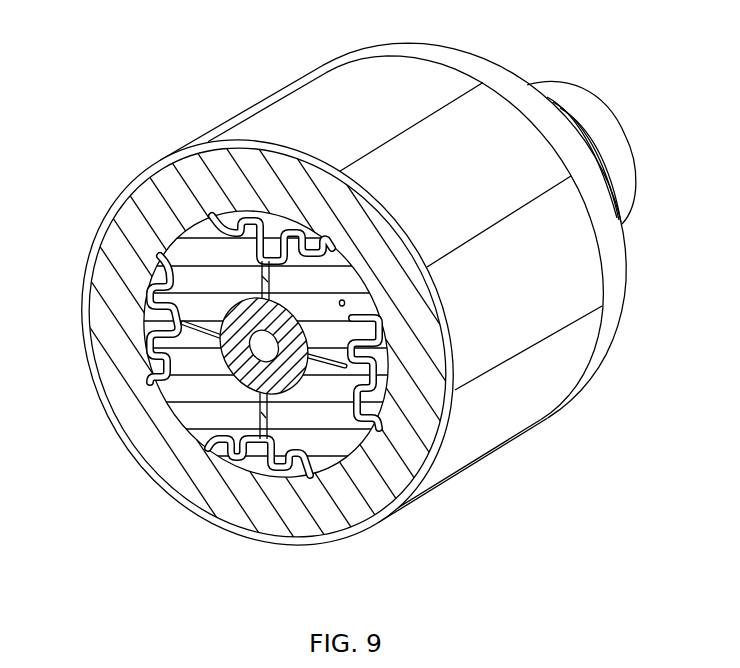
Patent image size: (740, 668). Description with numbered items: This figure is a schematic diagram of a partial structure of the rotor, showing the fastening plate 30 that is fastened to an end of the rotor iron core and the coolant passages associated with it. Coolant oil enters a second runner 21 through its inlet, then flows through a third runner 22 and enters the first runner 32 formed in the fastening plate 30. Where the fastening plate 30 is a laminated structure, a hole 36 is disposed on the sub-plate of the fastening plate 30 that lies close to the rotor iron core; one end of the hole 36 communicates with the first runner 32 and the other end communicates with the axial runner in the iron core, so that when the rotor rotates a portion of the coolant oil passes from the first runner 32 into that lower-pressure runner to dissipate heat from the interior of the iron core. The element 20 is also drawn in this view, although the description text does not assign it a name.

The hub 20 is at (268, 322).
The second runner 21 is at (243, 350).
The third runner 22 is at (267, 367).
The fastening plate 30 is at (165, 388).
The first runner 32 is at (390, 396).
The hole 36 is at (384, 347).